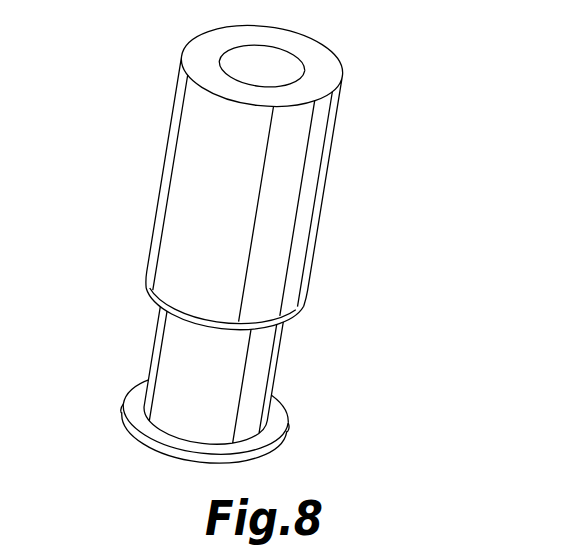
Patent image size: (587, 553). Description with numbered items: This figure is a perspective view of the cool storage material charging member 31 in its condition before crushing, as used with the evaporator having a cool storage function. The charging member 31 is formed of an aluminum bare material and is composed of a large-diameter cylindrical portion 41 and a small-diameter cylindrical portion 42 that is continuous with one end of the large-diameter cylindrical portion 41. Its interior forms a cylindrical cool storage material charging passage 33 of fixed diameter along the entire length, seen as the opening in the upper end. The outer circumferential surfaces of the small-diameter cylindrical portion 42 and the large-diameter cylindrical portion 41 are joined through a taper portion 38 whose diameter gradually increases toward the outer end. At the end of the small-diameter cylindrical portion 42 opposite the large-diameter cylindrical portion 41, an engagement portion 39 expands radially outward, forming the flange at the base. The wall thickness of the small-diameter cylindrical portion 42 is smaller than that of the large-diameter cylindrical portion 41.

The cool storage material charging member 31 is at (282, 244).
The cool storage material charging passage 33 is at (285, 79).
The taper portion 38 is at (197, 320).
The engagement portion 39 is at (128, 418).
The large-diameter cylindrical portion 41 is at (313, 150).
The small-diameter cylindrical portion 42 is at (250, 371).